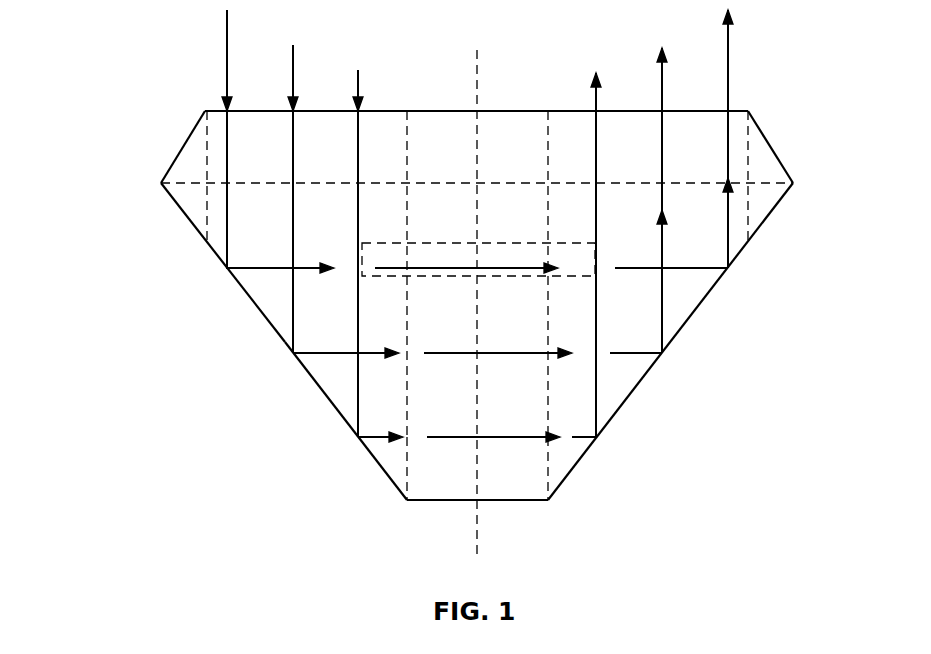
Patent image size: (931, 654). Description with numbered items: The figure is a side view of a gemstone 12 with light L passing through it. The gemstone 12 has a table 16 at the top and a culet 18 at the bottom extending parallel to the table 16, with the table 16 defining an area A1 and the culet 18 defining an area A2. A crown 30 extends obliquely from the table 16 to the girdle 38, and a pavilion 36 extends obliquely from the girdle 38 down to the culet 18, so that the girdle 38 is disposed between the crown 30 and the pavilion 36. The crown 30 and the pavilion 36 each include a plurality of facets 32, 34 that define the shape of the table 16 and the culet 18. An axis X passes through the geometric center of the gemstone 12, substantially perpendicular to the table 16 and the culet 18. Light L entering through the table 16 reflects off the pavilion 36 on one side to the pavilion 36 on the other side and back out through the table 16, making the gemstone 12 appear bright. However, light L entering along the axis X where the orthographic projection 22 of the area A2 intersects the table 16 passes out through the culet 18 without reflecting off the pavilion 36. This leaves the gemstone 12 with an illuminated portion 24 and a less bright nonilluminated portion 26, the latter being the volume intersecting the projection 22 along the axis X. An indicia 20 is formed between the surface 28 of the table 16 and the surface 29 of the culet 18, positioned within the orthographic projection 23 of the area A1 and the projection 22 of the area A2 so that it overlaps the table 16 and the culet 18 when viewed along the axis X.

The gemstone 12 is at (108, 115).
The table 16 is at (556, 106).
The culet 18 is at (452, 510).
The indicia 20 is at (482, 243).
The orthographic projection of area A2 22 is at (407, 225).
The orthographic projection of area A1 23 is at (749, 147).
The illuminated portion 24 is at (247, 200).
The nonilluminated portion 26 is at (490, 172).
The surface of the table 28 is at (340, 110).
The surface of the culet 29 is at (428, 503).
The crown 30 is at (168, 157).
The facets 32 is at (196, 121).
The facets 34 is at (257, 281).
The pavilion 36 is at (294, 366).
The girdle 38 is at (777, 183).
The axis X is at (475, 88).
The light L is at (730, 93).
The area A1 is at (685, 110).
The area A2 is at (513, 503).